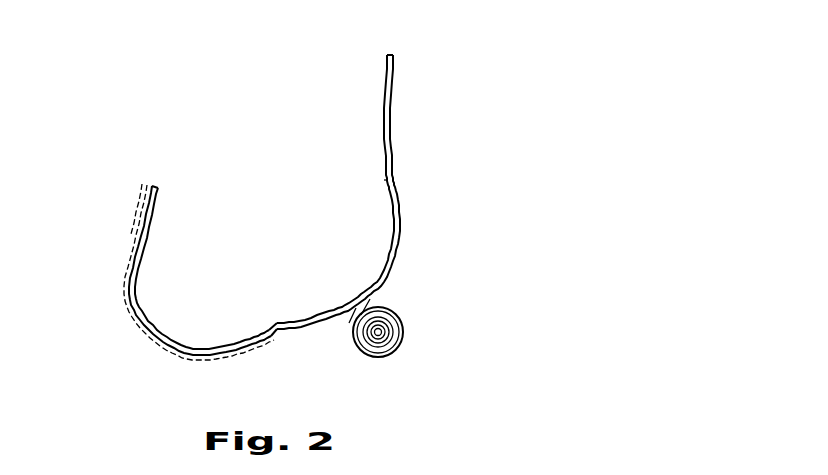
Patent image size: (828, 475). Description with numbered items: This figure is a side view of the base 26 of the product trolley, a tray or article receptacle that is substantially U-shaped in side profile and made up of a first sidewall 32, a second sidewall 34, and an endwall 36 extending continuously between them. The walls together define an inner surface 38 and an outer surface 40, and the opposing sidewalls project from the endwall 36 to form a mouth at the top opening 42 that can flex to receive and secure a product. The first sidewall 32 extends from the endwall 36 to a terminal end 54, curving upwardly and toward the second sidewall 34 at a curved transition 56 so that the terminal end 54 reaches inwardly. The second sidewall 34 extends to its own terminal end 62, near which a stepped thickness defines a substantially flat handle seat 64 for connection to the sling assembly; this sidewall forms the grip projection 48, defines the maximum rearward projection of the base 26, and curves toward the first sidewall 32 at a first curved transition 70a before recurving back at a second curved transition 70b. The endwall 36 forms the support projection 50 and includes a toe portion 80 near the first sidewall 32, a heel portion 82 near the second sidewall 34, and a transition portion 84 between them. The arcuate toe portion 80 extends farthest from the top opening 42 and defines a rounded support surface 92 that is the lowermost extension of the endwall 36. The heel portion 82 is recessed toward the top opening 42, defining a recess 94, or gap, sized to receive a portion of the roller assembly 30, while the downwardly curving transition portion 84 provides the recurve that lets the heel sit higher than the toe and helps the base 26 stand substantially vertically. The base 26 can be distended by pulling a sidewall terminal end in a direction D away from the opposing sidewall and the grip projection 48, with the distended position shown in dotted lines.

The base 26 is at (126, 148).
The roller assembly 30 is at (404, 351).
The first sidewall 32 is at (140, 202).
The second sidewall 34 is at (392, 162).
The endwall 36 is at (346, 326).
The inner surface 38 is at (152, 235).
The outer surface 40 is at (135, 314).
The top opening 42 is at (240, 148).
The grip projection 48 is at (382, 180).
The support projection 50 is at (180, 357).
The terminal end 54 is at (154, 186).
The curved transition 56 is at (126, 290).
The terminal end 62 is at (393, 56).
The handle seat 64 is at (385, 78).
The first curved transition 70a is at (401, 220).
The second curved transition 70b is at (391, 127).
The toe portion 80 is at (155, 339).
The heel portion 82 is at (384, 281).
The transition portion 84 is at (273, 327).
The support surface 92 is at (213, 362).
The recess 94 is at (341, 341).
The direction D is at (140, 177).